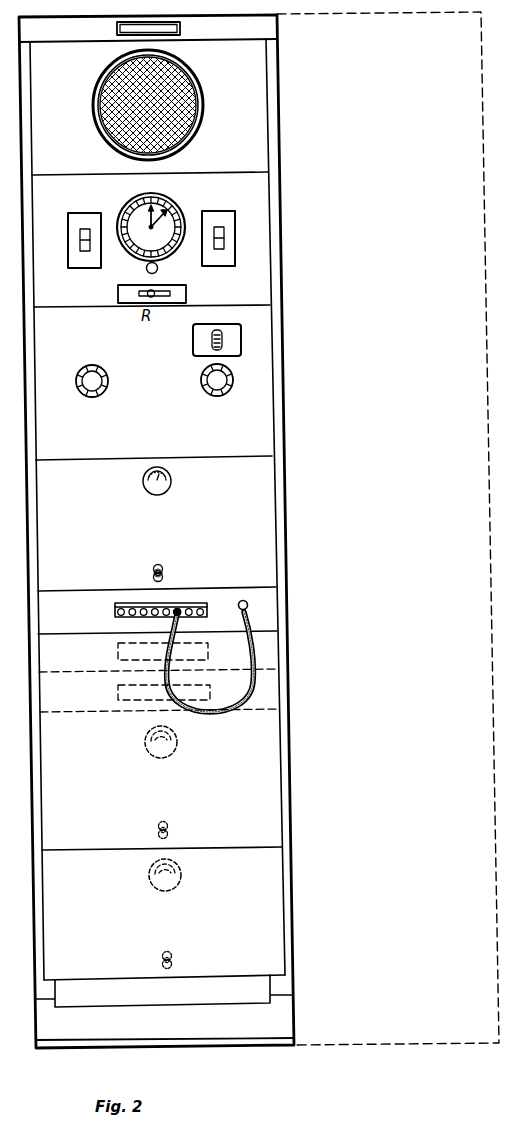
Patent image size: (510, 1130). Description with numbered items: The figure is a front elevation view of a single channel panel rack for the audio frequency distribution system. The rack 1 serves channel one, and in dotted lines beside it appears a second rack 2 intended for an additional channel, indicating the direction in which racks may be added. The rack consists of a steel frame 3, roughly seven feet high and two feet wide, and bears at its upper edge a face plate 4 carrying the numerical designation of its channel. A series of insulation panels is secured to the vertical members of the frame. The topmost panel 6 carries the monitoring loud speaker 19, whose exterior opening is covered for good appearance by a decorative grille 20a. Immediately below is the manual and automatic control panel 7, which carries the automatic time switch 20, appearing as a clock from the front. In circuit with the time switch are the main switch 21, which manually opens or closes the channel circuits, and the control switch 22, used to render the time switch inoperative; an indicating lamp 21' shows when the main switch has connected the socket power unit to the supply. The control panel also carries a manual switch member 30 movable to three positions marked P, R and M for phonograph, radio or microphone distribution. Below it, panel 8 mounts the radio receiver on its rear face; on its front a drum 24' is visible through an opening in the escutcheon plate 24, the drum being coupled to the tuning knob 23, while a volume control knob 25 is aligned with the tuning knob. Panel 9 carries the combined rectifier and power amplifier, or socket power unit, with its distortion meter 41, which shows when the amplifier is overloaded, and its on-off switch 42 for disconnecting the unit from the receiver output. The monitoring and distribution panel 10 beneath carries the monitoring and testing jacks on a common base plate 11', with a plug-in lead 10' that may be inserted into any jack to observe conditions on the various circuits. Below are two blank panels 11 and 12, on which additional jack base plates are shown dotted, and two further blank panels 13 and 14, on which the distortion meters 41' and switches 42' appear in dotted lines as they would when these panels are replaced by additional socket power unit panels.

The rack 1 is at (268, 30).
The second rack 2 is at (482, 67).
The frame 3 is at (280, 482).
The face plate 4 is at (116, 29).
The topmost panel 6 is at (258, 144).
The manual and automatic control panel 7 is at (262, 273).
The receiver panel 8 is at (266, 421).
The S. P. U. panel 9 is at (268, 566).
The monitoring and distribution panel 10 is at (178, 610).
The plug-in lead 10' is at (217, 674).
The blank panel 11 is at (177, 652).
The base plate 11' is at (177, 591).
The blank panel 12 is at (270, 700).
The blank panel 13 is at (276, 822).
The blank panel 14 is at (277, 926).
The monitoring loud speaker 19 is at (199, 110).
The automatic time switch 20 is at (176, 214).
The decorative grille 20a is at (104, 112).
The main switch 21 is at (72, 231).
The indicating lamp 21' is at (170, 268).
The control switch 22 is at (230, 222).
The tuning knob 23 is at (233, 380).
The escutcheon plate 24 is at (230, 337).
The drum 24' is at (193, 360).
The volume control knob 25 is at (108, 381).
The manual switch member 30 is at (149, 292).
The distortion meter 41 is at (171, 482).
The distortion meter 41' is at (183, 808).
The on-off switch 42 is at (175, 566).
The on-off switch 42' is at (186, 891).